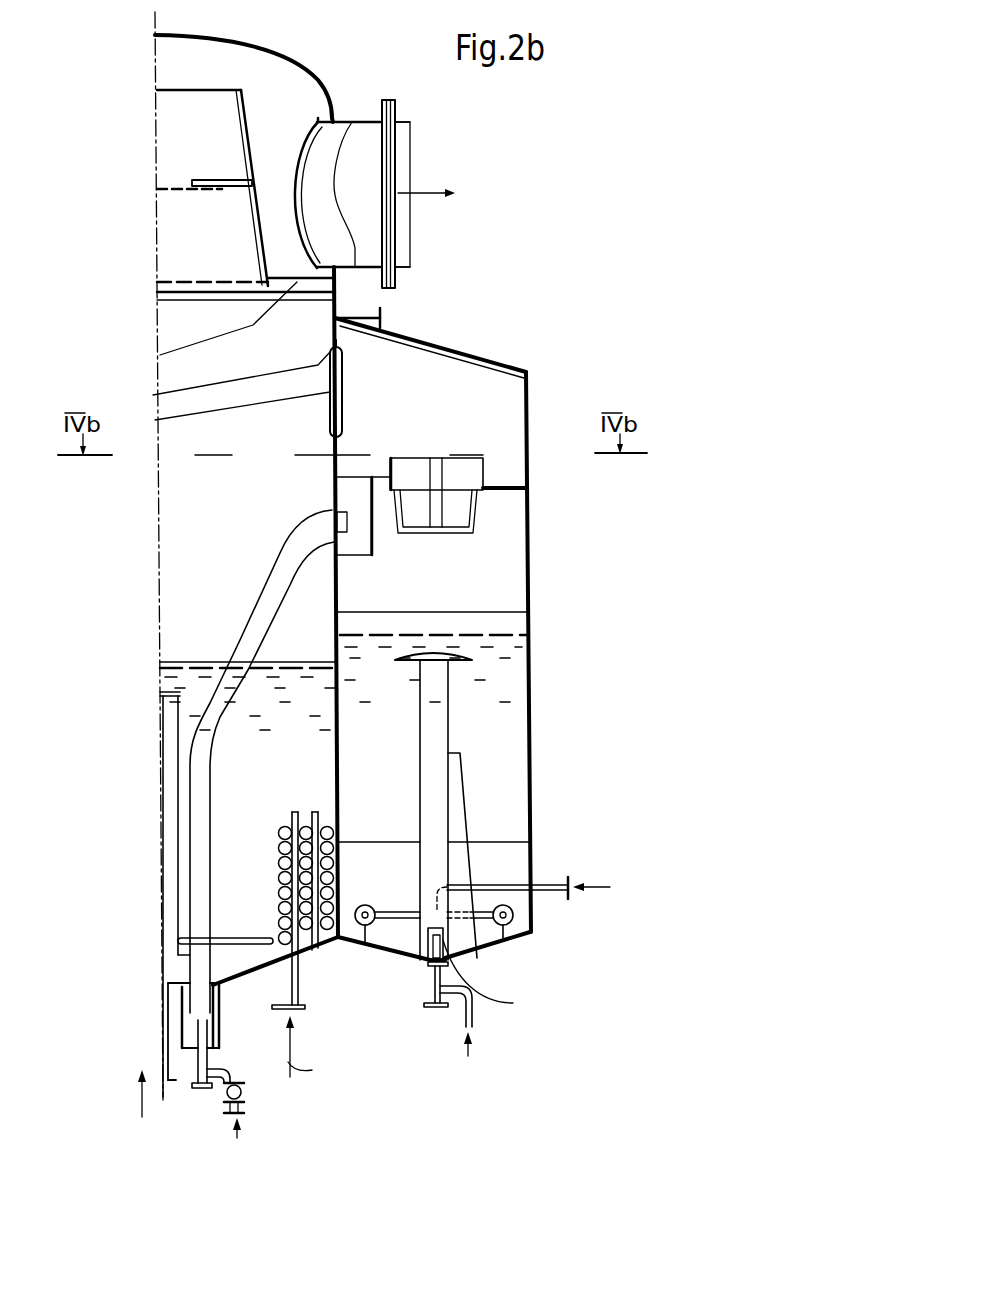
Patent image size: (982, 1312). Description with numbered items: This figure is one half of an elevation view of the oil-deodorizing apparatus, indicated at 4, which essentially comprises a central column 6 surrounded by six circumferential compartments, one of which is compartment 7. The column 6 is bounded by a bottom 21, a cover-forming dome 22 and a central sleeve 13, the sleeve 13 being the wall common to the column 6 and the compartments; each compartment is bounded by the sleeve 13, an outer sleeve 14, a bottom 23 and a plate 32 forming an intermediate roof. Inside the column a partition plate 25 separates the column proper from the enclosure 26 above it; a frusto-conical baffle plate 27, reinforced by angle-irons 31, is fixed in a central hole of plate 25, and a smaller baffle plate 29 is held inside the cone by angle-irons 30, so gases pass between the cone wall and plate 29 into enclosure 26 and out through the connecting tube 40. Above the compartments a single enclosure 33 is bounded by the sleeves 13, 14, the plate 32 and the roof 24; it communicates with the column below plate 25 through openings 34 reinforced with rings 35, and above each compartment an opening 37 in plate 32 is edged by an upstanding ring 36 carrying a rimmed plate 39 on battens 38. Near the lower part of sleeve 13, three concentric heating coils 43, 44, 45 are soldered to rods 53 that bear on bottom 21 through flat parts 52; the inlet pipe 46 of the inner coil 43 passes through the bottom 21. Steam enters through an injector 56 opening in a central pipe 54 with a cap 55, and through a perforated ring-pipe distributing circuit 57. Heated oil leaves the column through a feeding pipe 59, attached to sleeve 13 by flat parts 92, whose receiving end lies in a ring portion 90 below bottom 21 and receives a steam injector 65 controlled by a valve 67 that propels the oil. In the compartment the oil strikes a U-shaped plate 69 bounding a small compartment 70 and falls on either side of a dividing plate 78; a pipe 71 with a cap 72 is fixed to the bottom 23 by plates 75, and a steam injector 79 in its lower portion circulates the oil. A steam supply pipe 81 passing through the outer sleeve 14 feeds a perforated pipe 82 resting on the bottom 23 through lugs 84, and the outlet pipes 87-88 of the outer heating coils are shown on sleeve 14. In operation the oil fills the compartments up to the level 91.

The deodorizer apparatus 4 is at (612, 226).
The central column 6 is at (180, 580).
The circumferential compartment 7 is at (513, 507).
The central sleeve 13 is at (335, 492).
The outer sleeve 14 is at (528, 586).
The bottom 21 is at (302, 963).
The cover-forming dome 22 is at (288, 62).
The bottom 23 is at (492, 944).
The dome or roof 24 is at (465, 358).
The partition plate 25 is at (160, 356).
The enclosure 26 is at (242, 65).
The frusto-conical baffle plate 27 is at (250, 143).
The plate 29 is at (178, 191).
The angle-irons 30 is at (203, 177).
The angle-irons 31 is at (250, 235).
The plate forming an intermediate roof 32 is at (510, 485).
The single enclosure 33 is at (510, 412).
The opening 34 is at (232, 391).
The ring 35 is at (226, 382).
The upstanding ring 36 is at (485, 475).
The opening 37 is at (465, 477).
The battens 38 is at (433, 507).
The plate with downturned rim 39 is at (517, 555).
The connecting tube 40 is at (357, 143).
The inner coil 43 is at (282, 831).
The middle coil 44 is at (305, 827).
The outer coil 45 is at (325, 827).
The inlet pipe 46 is at (283, 994).
The flat part 52 is at (313, 960).
The rods 53 is at (293, 815).
The central pipe 54 is at (170, 760).
The cap 55 is at (182, 690).
The injector 56 is at (168, 1063).
The distributing circuit 57 is at (240, 942).
The feeding pipe 59 is at (247, 642).
The steam injector 65 is at (215, 1068).
The valve 67 is at (243, 1094).
The U-shaped plate 69 is at (375, 546).
The small compartment 70 is at (347, 502).
The pipe 71 is at (438, 730).
The cap 72 is at (453, 657).
The plates 75 is at (460, 818).
The plate 78 is at (345, 702).
The steam injector 79 is at (472, 1011).
The steam supply pipe 81 is at (570, 886).
The pipe 82 is at (410, 918).
The lugs 84 is at (364, 941).
The outlet pipes 87-88 is at (395, 318).
The common ring portion 90 is at (220, 1033).
The oil level 91 is at (493, 637).
The flat parts 92 is at (322, 568).